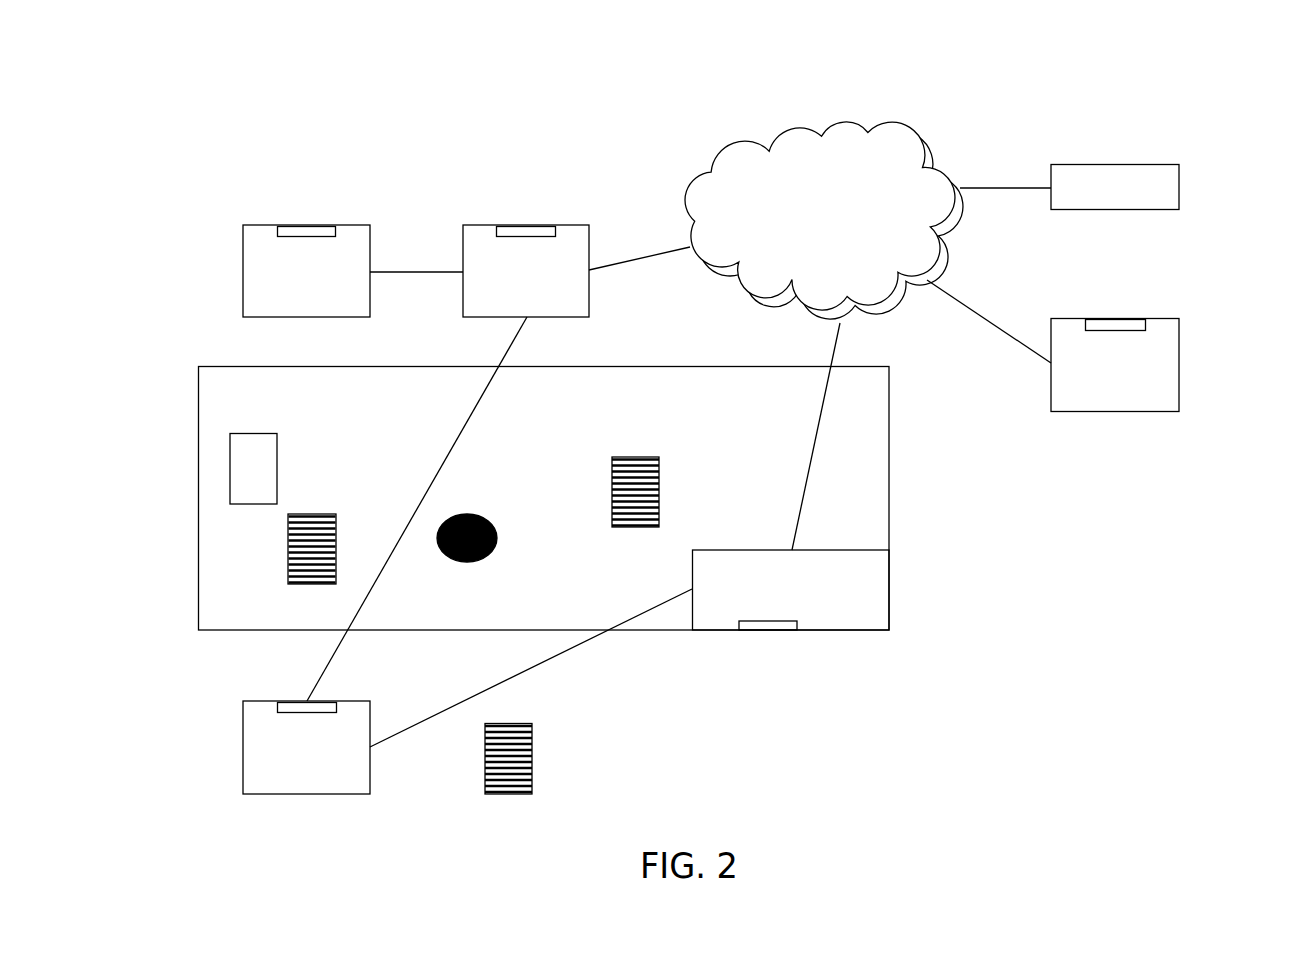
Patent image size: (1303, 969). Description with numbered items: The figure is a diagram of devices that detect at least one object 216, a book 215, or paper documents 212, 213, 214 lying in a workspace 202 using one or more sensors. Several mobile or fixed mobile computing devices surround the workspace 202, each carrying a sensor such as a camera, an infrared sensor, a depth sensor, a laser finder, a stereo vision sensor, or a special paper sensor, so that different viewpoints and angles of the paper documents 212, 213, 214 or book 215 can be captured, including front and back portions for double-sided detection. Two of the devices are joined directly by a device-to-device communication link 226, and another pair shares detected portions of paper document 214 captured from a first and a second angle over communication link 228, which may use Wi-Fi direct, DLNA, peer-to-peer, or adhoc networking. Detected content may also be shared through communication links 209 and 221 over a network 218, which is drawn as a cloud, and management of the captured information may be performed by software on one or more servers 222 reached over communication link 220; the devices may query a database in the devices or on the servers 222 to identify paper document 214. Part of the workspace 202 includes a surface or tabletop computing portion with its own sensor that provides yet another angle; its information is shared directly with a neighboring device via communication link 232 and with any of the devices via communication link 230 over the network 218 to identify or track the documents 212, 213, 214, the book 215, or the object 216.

The workspace 202 is at (889, 502).
The communication link 209 is at (637, 259).
The paper document 212 is at (660, 488).
The paper document 213 is at (532, 757).
The paper document 214 is at (310, 514).
The book 215 is at (252, 433).
The object 216 is at (498, 538).
The network 218 is at (797, 128).
The communication link 220 is at (1005, 186).
The communication link 221 is at (988, 322).
The server 222 is at (1112, 164).
The communication link 226 is at (417, 269).
The communication link 228 is at (473, 408).
The communication link 230 is at (815, 438).
The communication link 232 is at (460, 701).